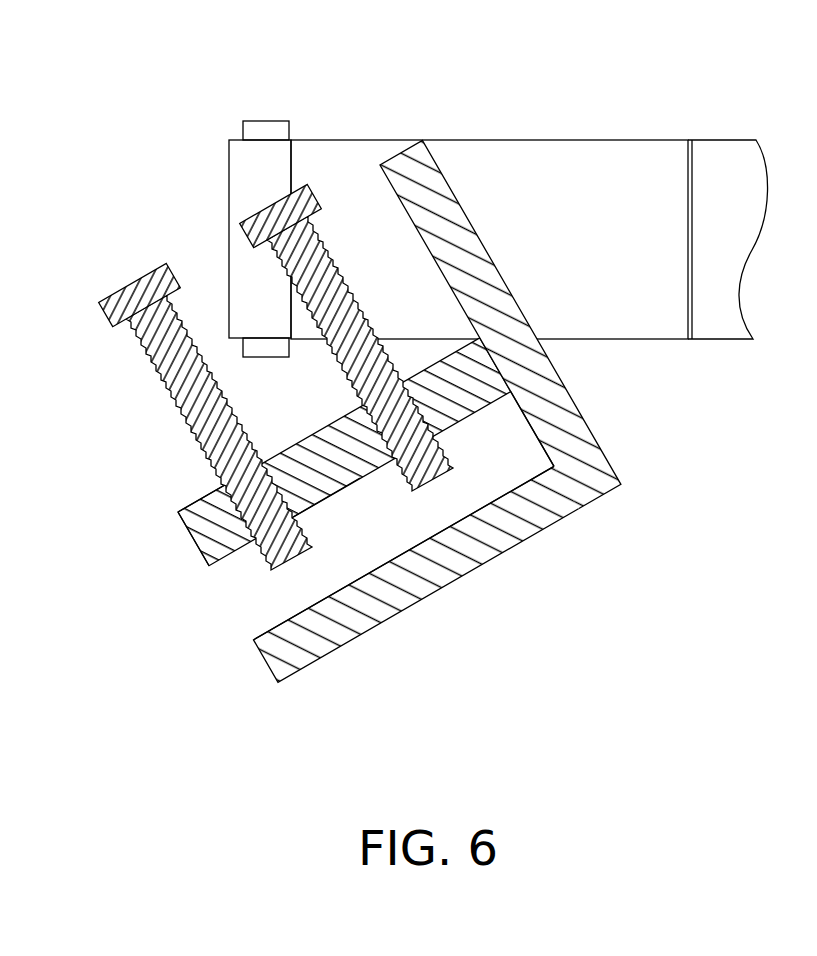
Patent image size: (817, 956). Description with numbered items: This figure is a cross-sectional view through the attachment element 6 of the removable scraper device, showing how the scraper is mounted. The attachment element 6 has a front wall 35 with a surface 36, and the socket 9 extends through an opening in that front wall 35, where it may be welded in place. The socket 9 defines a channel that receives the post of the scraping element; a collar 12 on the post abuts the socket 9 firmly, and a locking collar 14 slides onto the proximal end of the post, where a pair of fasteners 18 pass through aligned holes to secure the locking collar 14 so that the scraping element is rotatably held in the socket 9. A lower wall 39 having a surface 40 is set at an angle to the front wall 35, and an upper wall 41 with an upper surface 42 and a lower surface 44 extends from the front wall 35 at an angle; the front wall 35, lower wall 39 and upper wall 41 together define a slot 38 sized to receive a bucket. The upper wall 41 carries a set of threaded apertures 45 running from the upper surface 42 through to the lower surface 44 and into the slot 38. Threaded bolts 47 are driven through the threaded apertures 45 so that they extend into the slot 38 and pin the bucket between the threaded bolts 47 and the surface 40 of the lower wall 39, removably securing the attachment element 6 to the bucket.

The attachment element 6 is at (643, 492).
The socket 9 is at (571, 152).
The collar 12 is at (727, 152).
The locking collar 14 is at (245, 162).
The fasteners 18 is at (263, 128).
The front wall 35 is at (542, 383).
The surface 36 is at (532, 423).
The slot 38 is at (385, 536).
The lower wall 39 is at (420, 580).
The surface 40 is at (468, 528).
The upper wall 41 is at (215, 527).
The upper surface 42 is at (200, 496).
The lower surface 44 is at (313, 506).
The threaded apertures 45 is at (257, 492).
The threaded bolts 47 is at (152, 353).